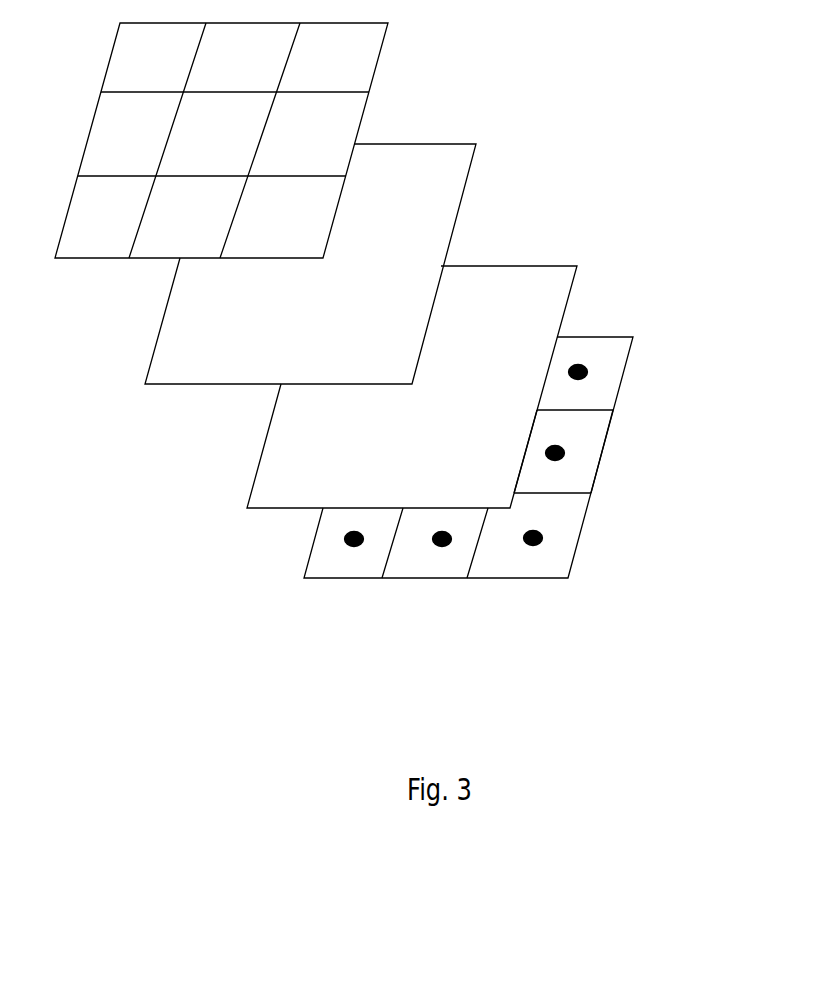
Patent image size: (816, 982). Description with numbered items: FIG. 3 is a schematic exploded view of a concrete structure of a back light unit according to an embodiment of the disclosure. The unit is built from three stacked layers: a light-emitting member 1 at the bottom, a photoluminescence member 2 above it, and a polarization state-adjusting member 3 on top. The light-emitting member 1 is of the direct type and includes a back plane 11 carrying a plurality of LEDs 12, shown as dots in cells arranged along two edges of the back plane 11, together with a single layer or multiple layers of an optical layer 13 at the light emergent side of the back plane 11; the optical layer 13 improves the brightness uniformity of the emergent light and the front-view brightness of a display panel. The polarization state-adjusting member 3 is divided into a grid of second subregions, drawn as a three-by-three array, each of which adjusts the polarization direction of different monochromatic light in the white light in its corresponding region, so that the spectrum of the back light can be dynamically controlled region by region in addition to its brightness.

The light-emitting member 1 is at (497, 422).
The back plane 11 is at (607, 451).
The LED 12 is at (578, 372).
The optical layer 13 is at (532, 303).
The photoluminescence member 2 is at (426, 182).
The polarization state-adjusting member 3 is at (352, 51).